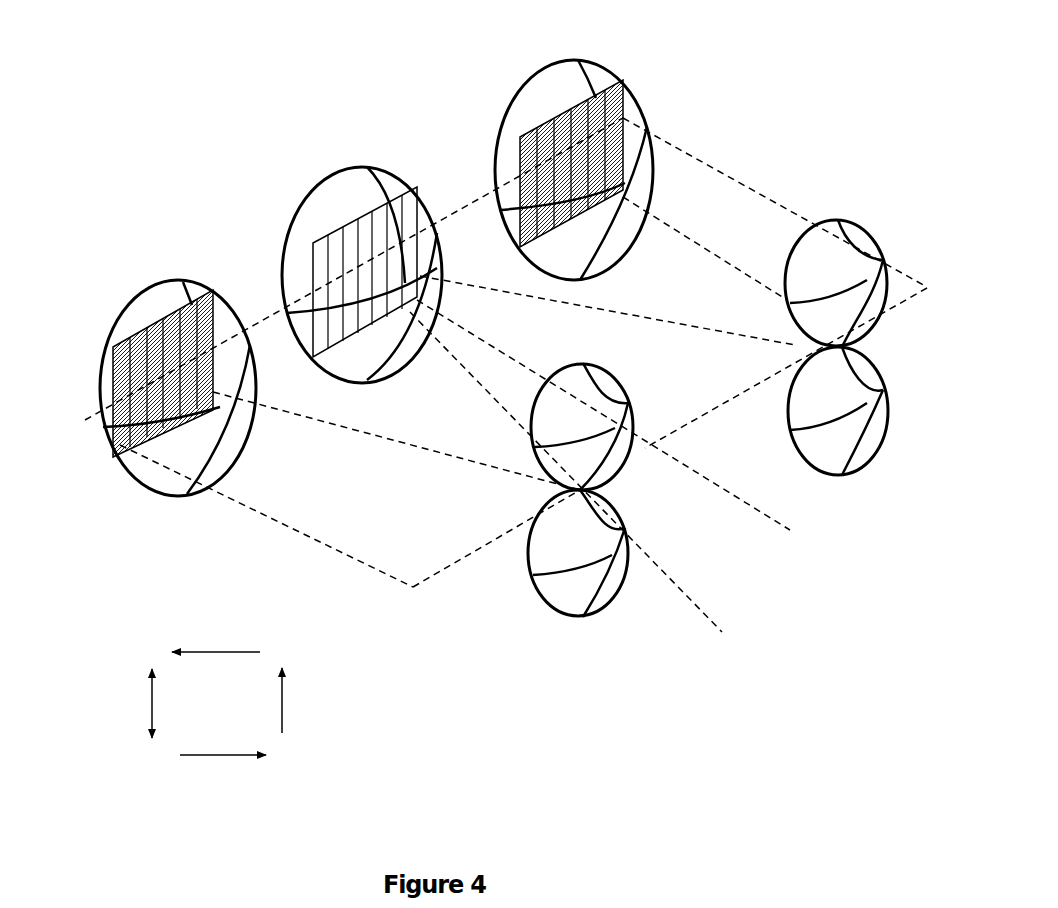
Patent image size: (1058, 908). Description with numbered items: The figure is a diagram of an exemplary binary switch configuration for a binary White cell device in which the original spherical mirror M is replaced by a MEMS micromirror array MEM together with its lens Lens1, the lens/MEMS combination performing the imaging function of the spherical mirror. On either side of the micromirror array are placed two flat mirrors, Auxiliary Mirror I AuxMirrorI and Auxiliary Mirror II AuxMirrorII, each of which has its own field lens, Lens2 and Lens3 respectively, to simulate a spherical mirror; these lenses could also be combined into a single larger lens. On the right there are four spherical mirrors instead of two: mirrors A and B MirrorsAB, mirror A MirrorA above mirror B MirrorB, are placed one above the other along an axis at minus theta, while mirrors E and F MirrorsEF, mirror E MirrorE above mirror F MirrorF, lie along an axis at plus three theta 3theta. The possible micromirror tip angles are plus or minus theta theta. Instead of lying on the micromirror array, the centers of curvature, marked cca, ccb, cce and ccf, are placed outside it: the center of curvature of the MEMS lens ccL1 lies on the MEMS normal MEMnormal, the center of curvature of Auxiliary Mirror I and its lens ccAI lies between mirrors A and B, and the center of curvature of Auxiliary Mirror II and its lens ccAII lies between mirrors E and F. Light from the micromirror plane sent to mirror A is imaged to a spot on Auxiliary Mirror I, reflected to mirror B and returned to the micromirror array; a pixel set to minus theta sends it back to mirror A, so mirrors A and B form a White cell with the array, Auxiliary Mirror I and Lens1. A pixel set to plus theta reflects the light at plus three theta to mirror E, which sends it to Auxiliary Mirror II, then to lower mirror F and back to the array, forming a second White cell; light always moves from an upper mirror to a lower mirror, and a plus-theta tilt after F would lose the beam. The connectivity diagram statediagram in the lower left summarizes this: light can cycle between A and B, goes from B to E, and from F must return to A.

The lens associated with the MEMS Lens1 is at (347, 275).
The field lens of Auxiliary Mirror I Lens2 is at (173, 396).
The field lens of Auxiliary Mirror II Lens3 is at (602, 170).
The MEMS micromirror array MEM is at (366, 212).
The Auxiliary Mirror I AuxMirrorI is at (148, 316).
The Auxiliary Mirror II AuxMirrorII is at (573, 100).
The mirror A MirrorA is at (591, 426).
The mirror B MirrorB is at (591, 553).
The mirror E MirrorE is at (841, 283).
The mirror F MirrorF is at (848, 411).
The mirrors E and F MirrorsEF is at (884, 208).
The mirrors A and B MirrorsAB is at (606, 638).
The center of curvature cc_a cca is at (463, 201).
The center of curvature cc_b ccb is at (442, 218).
The center of curvature cc_e cce is at (265, 322).
The center of curvature cc_f ccf is at (275, 332).
The center of curvature of Auxiliary Mirror I and its lens ccAI is at (578, 491).
The center of curvature of Auxiliary Mirror II and its lens ccAII is at (842, 347).
The center of curvature of the MEMS lens ccL1 is at (652, 442).
The micromirror tip angle theta is at (643, 450).
The reflection angle three theta 3theta is at (795, 350).
The MEMS normal MEMnormal is at (824, 563).
The connectivity diagram statediagram is at (216, 704).